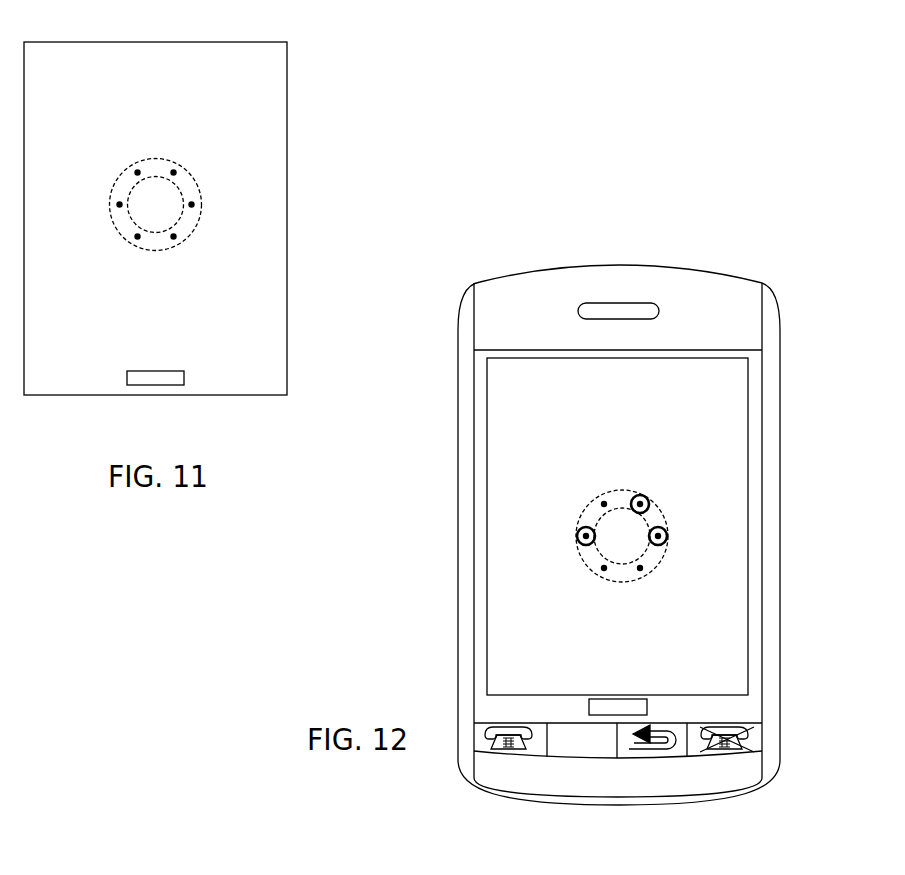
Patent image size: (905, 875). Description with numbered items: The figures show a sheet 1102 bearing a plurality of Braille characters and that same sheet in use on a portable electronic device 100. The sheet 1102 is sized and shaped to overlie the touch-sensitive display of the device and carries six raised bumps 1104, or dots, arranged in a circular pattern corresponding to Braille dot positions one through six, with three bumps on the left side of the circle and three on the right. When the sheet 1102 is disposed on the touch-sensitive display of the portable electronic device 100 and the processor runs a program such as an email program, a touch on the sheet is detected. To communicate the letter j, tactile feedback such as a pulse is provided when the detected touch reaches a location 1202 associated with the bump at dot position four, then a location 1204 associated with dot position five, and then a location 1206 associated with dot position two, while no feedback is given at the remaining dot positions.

In FIG. 12, the portable electronic device 100 is at (812, 803).
In FIG. 11, the sheet 1102 is at (287, 263).
In FIG. 12, the sheet 1102 is at (485, 600).
In FIG. 11, the raised bumps 1104 is at (180, 170).
In FIG. 12, the raised bumps 1104 is at (598, 503).
In FIG. 12, the location 1202 is at (650, 500).
In FIG. 12, the location 1204 is at (668, 535).
In FIG. 12, the location 1206 is at (577, 535).